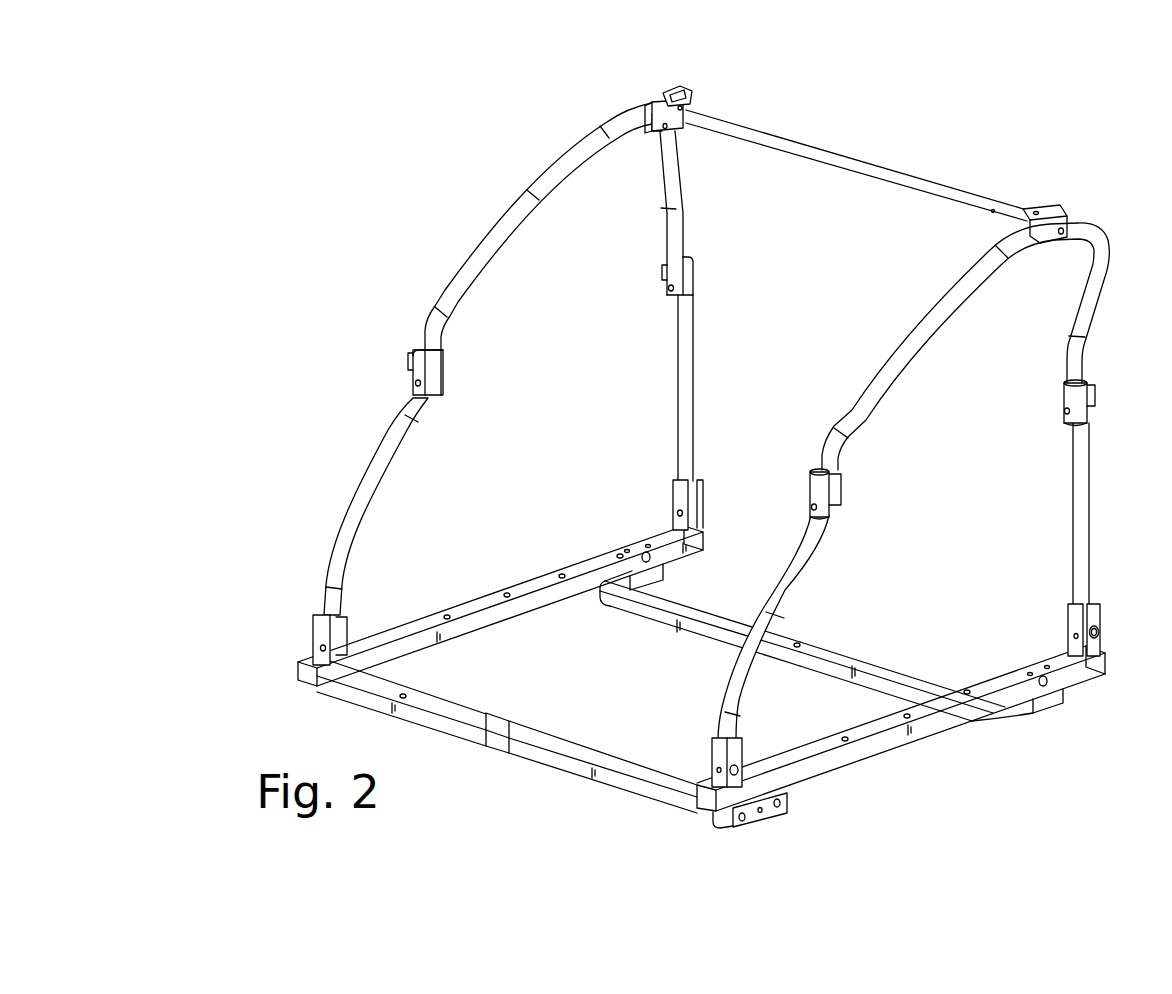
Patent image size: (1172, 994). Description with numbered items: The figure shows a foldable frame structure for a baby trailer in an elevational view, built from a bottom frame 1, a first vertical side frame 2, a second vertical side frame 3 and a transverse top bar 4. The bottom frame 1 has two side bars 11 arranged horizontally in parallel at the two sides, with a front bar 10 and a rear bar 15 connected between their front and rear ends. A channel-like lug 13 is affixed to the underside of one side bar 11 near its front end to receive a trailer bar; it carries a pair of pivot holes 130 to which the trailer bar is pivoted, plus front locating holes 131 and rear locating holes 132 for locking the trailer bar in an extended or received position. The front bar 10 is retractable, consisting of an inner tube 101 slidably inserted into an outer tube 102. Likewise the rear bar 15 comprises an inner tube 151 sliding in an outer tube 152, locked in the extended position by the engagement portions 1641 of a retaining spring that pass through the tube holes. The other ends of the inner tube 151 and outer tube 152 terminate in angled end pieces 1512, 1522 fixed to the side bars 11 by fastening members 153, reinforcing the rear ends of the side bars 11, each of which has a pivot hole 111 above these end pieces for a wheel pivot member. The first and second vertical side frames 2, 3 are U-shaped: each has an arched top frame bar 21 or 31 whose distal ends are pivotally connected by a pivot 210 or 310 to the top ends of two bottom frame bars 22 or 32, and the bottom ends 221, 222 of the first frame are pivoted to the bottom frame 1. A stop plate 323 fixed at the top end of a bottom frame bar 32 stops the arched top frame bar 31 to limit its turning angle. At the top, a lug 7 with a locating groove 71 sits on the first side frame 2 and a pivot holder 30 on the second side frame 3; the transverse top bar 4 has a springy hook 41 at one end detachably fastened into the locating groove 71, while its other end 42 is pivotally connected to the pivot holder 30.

The bottom frame 1 is at (905, 752).
The front bar 10 is at (607, 621).
The inner tube 101 is at (460, 711).
The outer tube 102 is at (582, 744).
The side bars 11 is at (592, 560).
The pivot hole 111 is at (650, 557).
The channel-like lug 13 is at (760, 823).
The pivot holes 130 is at (761, 812).
The front locating holes 131 is at (740, 820).
The rear locating holes 132 is at (778, 803).
The rear bar 15 is at (882, 495).
The inner tube 151 is at (748, 622).
The angled end piece 1512 is at (650, 583).
The outer tube 152 is at (853, 648).
The angled end piece 1522 is at (1053, 707).
The fastening members 153 is at (627, 547).
The engagement portions 1641 is at (797, 640).
The first vertical side frame 2 is at (470, 245).
The arched top frame bar 21 is at (526, 197).
The pivot 210 is at (412, 383).
The bottom frame bars 22 is at (350, 510).
The bottom end 221 is at (318, 643).
The bottom end 222 is at (693, 493).
The second vertical side frame 3 is at (857, 383).
The pivot holder 30 is at (1058, 207).
The arched top frame bar 31 is at (937, 303).
The pivot 310 is at (1066, 411).
The bottom frame bars 32 is at (808, 551).
The stop plate 323 is at (1064, 388).
The transverse top bar 4 is at (895, 158).
The springy hook 41 is at (664, 122).
The other end 42 is at (1015, 218).
The lug 7 is at (692, 85).
The locating groove 71 is at (663, 97).